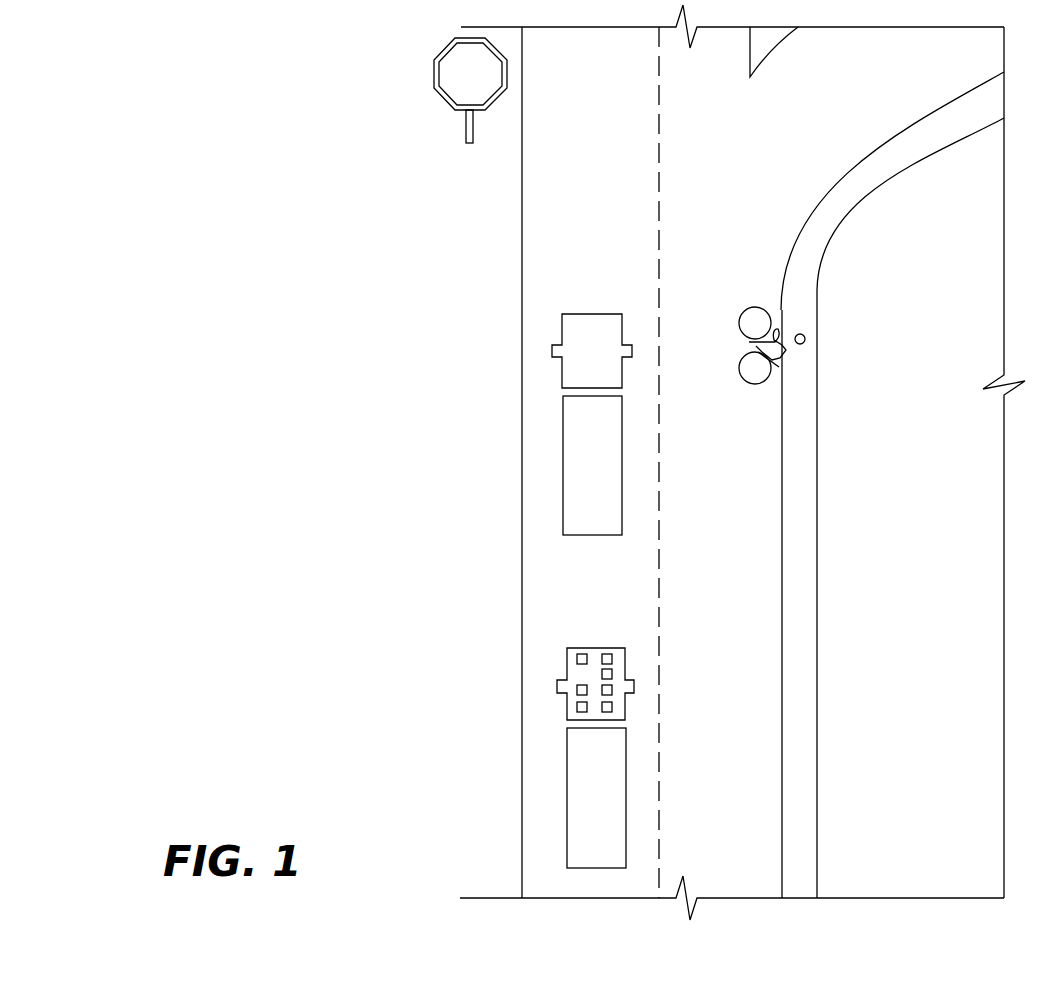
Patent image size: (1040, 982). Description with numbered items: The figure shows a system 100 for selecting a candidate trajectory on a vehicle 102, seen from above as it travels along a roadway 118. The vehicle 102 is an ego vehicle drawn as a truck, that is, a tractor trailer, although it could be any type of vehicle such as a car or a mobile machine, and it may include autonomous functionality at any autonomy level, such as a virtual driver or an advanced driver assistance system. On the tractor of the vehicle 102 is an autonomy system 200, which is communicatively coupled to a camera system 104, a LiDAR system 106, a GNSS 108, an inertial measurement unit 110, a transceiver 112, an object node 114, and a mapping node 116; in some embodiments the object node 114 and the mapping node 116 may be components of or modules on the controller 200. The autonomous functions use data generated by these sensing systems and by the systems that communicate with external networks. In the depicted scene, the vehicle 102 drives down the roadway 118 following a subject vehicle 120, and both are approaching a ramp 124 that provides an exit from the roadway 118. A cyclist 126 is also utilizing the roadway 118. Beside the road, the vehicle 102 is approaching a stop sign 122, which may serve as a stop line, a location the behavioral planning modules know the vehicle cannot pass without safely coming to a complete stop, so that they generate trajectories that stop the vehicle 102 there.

The system 100 is at (696, 646).
The vehicle 102 is at (612, 820).
The camera system 104 is at (582, 654).
The LiDAR system 106 is at (607, 654).
The GNSS 108 is at (612, 674).
The inertial measurement unit 110 is at (582, 707).
The transceiver 112 is at (612, 690).
The object node 114 is at (582, 690).
The mapping node 116 is at (612, 707).
The roadway 118 is at (709, 503).
The subject vehicle 120 is at (605, 333).
The stop sign 122 is at (450, 85).
The ramp 124 is at (812, 99).
The cyclist 126 is at (805, 338).
The autonomy system 200 is at (578, 672).